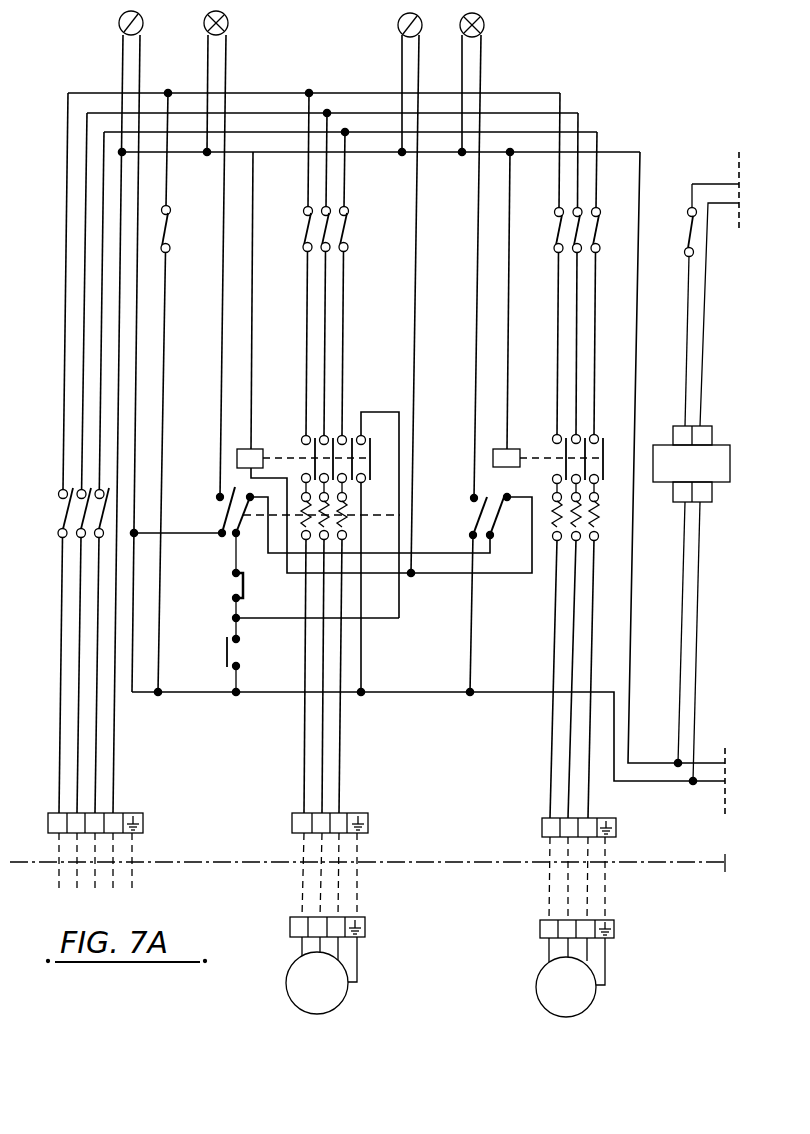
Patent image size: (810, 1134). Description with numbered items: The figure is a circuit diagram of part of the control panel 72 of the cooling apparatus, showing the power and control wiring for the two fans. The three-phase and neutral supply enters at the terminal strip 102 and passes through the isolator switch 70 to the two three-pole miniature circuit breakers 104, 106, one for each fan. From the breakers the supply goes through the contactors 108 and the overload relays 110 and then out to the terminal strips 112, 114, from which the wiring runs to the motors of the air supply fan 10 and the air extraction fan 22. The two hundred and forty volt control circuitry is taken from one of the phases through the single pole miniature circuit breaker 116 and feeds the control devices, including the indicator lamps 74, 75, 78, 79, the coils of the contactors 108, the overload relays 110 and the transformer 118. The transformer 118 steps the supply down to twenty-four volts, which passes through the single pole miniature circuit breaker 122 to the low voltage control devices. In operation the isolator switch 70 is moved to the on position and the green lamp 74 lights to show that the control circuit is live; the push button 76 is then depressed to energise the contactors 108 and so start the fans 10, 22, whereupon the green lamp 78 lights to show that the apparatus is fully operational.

The air supply fan 10 is at (288, 998).
The air extraction fan 22 is at (528, 998).
The isolator switch 70 is at (70, 500).
The control panel 72 is at (494, 866).
The green lamp 74 is at (119, 23).
The indicator lamp 75 is at (228, 23).
The push button 76 is at (227, 652).
The green lamp 78 is at (399, 28).
The indicator lamp 79 is at (484, 25).
The terminal strip 102 is at (114, 814).
The 3 pole miniature circuit breaker 104 is at (349, 230).
The 3 pole miniature circuit breaker 106 is at (554, 223).
The contactor 108 is at (296, 447).
The overload relay 110 is at (220, 518).
The terminal strip 112 is at (290, 823).
The terminal strip 114 is at (540, 828).
The single pole miniature circuit breaker 116 is at (168, 230).
The 240/24 volt transformer 118 is at (668, 476).
The single pole miniature circuit breaker 122 is at (686, 228).